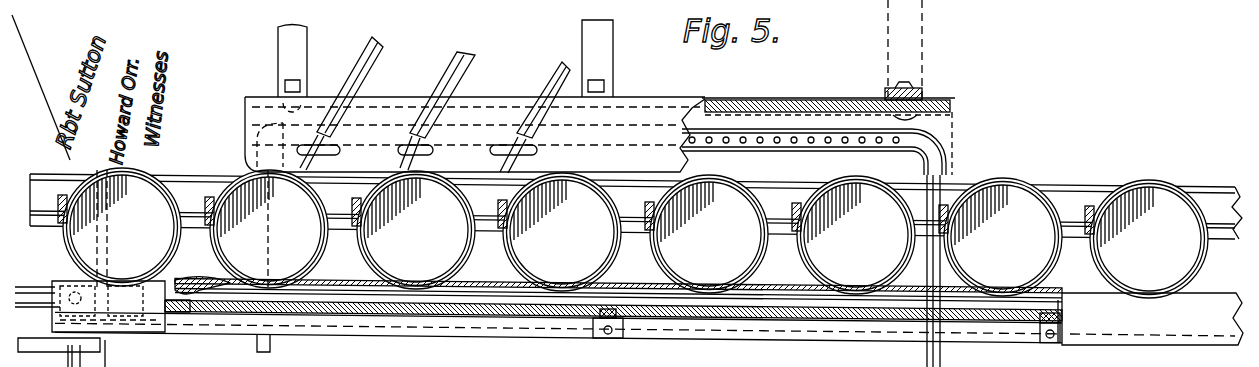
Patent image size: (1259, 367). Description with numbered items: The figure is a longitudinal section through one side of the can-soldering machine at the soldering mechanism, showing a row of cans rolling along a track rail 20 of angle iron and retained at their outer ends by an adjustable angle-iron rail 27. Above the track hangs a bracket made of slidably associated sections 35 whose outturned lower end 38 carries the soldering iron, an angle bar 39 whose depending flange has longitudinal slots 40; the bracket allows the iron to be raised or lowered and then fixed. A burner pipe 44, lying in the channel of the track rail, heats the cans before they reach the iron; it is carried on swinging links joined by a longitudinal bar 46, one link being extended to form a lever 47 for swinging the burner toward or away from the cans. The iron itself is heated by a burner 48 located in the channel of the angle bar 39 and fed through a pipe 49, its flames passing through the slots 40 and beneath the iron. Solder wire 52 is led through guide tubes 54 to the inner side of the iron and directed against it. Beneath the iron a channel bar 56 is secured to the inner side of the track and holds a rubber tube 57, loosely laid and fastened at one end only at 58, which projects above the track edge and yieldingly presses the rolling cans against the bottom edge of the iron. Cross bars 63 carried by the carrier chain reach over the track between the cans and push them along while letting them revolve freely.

The track rail 20 is at (368, 328).
The rail 27 is at (192, 181).
The bracket section 35 is at (285, 47).
The outturned lower end 38 is at (890, 100).
The soldering iron angle bar 39 is at (966, 105).
The slot 40 is at (338, 148).
The burner pipe 44 is at (30, 293).
The longitudinal bar 46 is at (61, 352).
The lever 47 is at (107, 210).
The burner 48 is at (748, 128).
The fuel pipe 49 is at (267, 345).
The solder wire 52 is at (430, 154).
The guide tube 54 is at (373, 65).
The channel bar 56 is at (505, 319).
The rubber tube 57 is at (762, 300).
The securing point of rubber tube 58 is at (193, 315).
The cross bar 63 is at (208, 224).